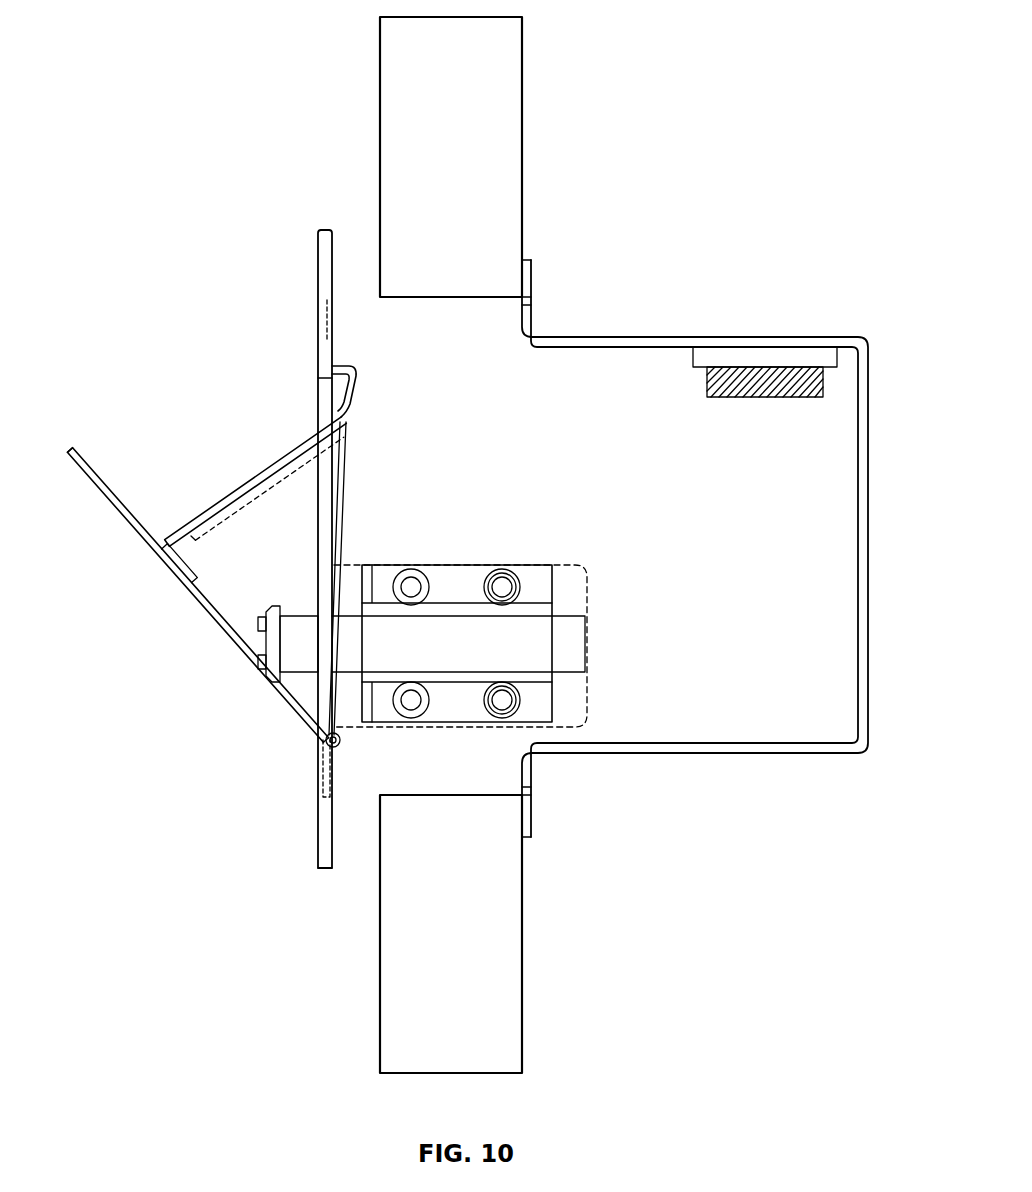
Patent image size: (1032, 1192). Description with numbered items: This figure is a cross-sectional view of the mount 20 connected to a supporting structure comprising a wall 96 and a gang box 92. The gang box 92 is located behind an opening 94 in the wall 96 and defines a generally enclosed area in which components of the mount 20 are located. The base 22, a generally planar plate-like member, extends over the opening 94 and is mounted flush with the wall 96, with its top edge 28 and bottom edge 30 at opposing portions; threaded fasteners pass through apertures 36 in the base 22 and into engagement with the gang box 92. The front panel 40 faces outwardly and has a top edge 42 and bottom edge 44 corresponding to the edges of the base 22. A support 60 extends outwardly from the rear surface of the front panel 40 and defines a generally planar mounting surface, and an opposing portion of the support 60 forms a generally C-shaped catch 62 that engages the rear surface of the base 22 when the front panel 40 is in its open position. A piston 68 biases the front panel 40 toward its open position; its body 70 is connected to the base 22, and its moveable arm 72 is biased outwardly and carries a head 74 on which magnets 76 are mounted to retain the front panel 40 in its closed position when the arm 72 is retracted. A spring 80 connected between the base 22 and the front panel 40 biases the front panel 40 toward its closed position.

The mount 20 is at (280, 244).
The base 22 is at (323, 254).
The top edge 28 is at (325, 228).
The bottom edge 30 is at (325, 868).
The apertures 36 is at (318, 330).
The front panel 40 is at (106, 488).
The top edge 42 is at (78, 440).
The bottom edge 44 is at (316, 748).
The support 60 is at (290, 456).
The catch 62 is at (356, 378).
The piston 68 is at (545, 566).
The body 70 is at (462, 566).
The arm 72 is at (302, 616).
The head 74 is at (262, 662).
The magnets 76 is at (258, 628).
The spring 80 is at (341, 742).
The gang box 92 is at (868, 345).
The opening 94 is at (380, 795).
The wall 96 is at (522, 158).